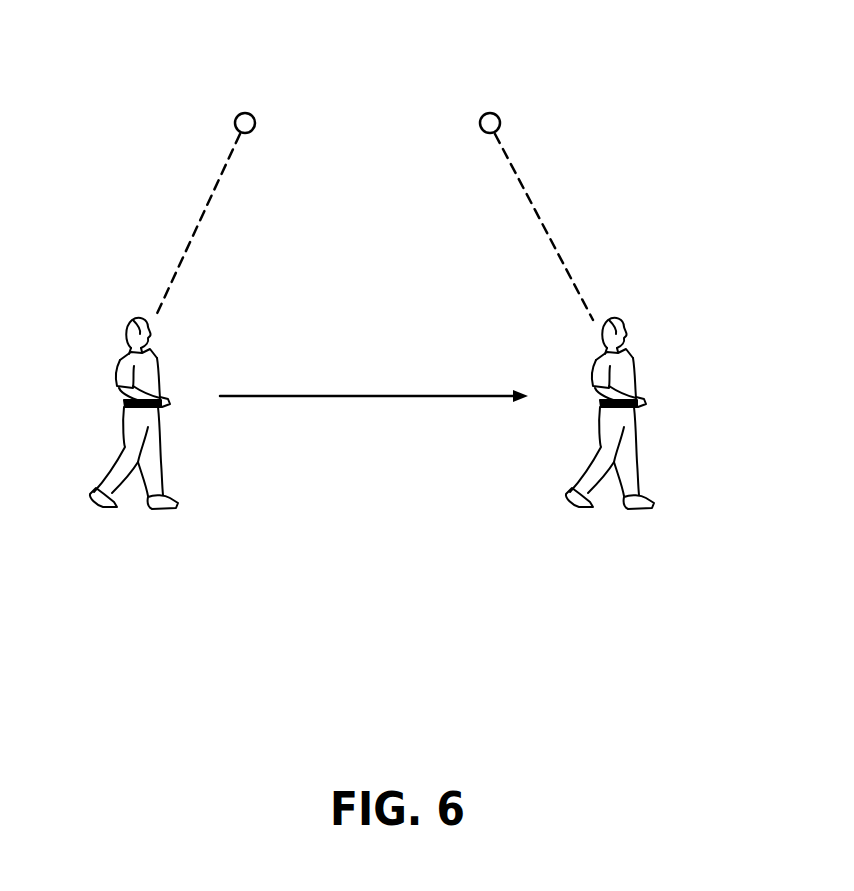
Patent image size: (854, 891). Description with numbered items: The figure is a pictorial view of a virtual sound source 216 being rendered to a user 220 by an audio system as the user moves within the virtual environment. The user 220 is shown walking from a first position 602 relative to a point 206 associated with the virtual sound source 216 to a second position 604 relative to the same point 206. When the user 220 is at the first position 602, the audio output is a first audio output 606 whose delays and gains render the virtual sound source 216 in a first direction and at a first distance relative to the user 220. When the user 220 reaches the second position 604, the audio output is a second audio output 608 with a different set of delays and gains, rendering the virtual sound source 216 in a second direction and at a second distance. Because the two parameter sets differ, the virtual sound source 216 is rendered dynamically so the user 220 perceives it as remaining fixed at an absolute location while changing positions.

The point 206 is at (361, 73).
The virtual sound source 216 is at (240, 113).
The user 220 is at (371, 437).
The first position 602 is at (121, 526).
The second position 604 is at (617, 526).
The first audio output 606 is at (203, 210).
The second audio output 608 is at (536, 210).